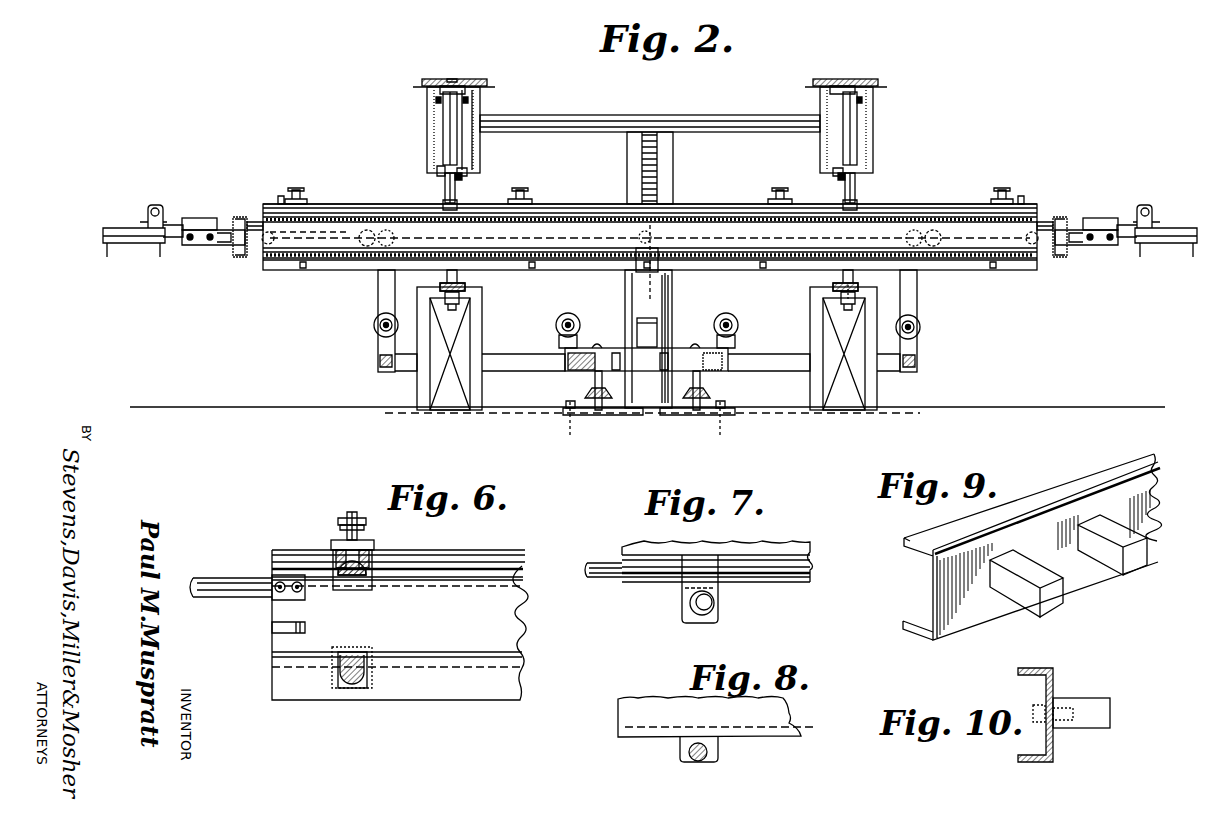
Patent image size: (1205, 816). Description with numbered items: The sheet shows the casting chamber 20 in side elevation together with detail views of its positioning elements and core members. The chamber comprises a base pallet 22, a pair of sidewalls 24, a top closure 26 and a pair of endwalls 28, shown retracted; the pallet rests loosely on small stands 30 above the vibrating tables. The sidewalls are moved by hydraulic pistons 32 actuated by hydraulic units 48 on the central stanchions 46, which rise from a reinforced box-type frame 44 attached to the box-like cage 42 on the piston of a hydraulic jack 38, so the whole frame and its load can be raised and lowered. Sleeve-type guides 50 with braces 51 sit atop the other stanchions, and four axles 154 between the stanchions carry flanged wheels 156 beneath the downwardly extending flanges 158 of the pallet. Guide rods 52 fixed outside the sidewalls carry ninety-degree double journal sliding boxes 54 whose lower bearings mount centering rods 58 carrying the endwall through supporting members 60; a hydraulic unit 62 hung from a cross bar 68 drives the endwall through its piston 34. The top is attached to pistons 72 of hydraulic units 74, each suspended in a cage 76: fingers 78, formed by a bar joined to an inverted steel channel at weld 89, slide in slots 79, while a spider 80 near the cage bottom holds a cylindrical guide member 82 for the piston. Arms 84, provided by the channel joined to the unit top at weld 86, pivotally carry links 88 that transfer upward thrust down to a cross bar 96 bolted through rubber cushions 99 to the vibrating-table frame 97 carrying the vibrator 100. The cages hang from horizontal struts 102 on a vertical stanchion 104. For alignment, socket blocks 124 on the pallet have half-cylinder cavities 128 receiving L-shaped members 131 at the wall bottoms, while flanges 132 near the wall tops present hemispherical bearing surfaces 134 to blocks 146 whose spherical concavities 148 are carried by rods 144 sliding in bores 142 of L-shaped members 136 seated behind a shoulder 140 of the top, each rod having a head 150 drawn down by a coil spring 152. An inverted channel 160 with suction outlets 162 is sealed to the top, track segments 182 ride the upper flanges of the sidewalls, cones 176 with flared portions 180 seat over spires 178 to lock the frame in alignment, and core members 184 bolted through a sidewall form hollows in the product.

In FIG. 2, the casting chamber 20 is at (872, 233).
In FIG. 2, the base pallet 22 is at (325, 262).
In FIG. 6, the base pallet 22 is at (515, 670).
In FIG. 8, the base pallet 22 is at (622, 723).
In FIG. 6, the sidewalls 24 is at (280, 617).
In FIG. 7, the sidewalls 24 is at (650, 557).
In FIG. 9, the sidewalls 24 is at (1144, 490).
In FIG. 10, the sidewalls 24 is at (1053, 675).
In FIG. 2, the top closure 26 is at (710, 215).
In FIG. 2, the endwalls 28 is at (250, 258).
In FIG. 2, the stands 30 is at (463, 278).
In FIG. 2, the hydraulic pistons 32 is at (652, 238).
In FIG. 2, the piston 34 is at (178, 240).
In FIG. 2, the hydraulic jack 38 is at (622, 345).
In FIG. 2, the box-like cage 42 is at (652, 325).
In FIG. 2, the reinforced box-type frame 44 is at (518, 365).
In FIG. 2, the stanchions 46 is at (378, 287).
In FIG. 2, the hydraulic unit 48 is at (639, 238).
In FIG. 2, the sleeve-type guides 50 is at (398, 238).
In FIG. 2, the braces 51 is at (292, 262).
In FIG. 2, the guide rods 52 is at (257, 221).
In FIG. 6, the guide rods 52 is at (217, 578).
In FIG. 7, the guide rods 52 is at (601, 563).
In FIG. 2, the double journal sliding box 54 is at (204, 217).
In FIG. 2, the centering rods 58 is at (210, 242).
In FIG. 2, the supporting members 60 is at (232, 248).
In FIG. 2, the hydraulic unit 62 is at (122, 226).
In FIG. 2, the cross bar 68 is at (158, 208).
In FIG. 2, the pistons 72 is at (445, 190).
In FIG. 2, the hydraulic units 74 is at (450, 130).
In FIG. 2, the cage 76 is at (476, 149).
In FIG. 2, the laterally-directed fingers 78 is at (422, 90).
In FIG. 2, the slots 79 is at (474, 95).
In FIG. 2, the spider 80 is at (469, 171).
In FIG. 2, the cylindrical guide member 82 is at (462, 178).
In FIG. 2, the arms 84 is at (436, 100).
In FIG. 2, the inverted steel channel weld 86 is at (463, 86).
In FIG. 2, the link 88 is at (437, 178).
In FIG. 2, the finger bar weld 89 is at (450, 79).
In FIG. 2, the cross bar 96 is at (440, 283).
In FIG. 2, the frame 97 is at (483, 330).
In FIG. 2, the rubber cushions 99 is at (856, 286).
In FIG. 2, the vibrator 100 is at (460, 300).
In FIG. 2, the struts 102 is at (655, 122).
In FIG. 2, the vertical stanchion 104 is at (675, 155).
In FIG. 6, the socket blocks 124 is at (332, 680).
In FIG. 8, the socket blocks 124 is at (684, 749).
In FIG. 8, the half-cylinder 128 is at (718, 749).
In FIG. 6, the L-shaped members 131 is at (352, 678).
In FIG. 8, the L-shaped members 131 is at (702, 761).
In FIG. 6, the flanges 132 is at (365, 590).
In FIG. 7, the flanges 132 is at (718, 597).
In FIG. 6, the hemispherical bearing surface 134 is at (355, 578).
In FIG. 7, the hemispherical bearing surface 134 is at (716, 612).
In FIG. 2, the L-shaped member 136 is at (534, 199).
In FIG. 2, the shoulder 140 is at (597, 208).
In FIG. 6, the shoulder 140 is at (472, 553).
In FIG. 6, the cylindrical bore 142 is at (364, 528).
In FIG. 2, the rod 144 is at (308, 196).
In FIG. 6, the rod 144 is at (353, 512).
In FIG. 6, the block 146 is at (336, 556).
In FIG. 6, the spherical concavity 148 is at (372, 562).
In FIG. 6, the head 150 is at (342, 521).
In FIG. 6, the coil spring 152 is at (338, 550).
In FIG. 2, the axle 154 is at (374, 328).
In FIG. 2, the flanged wheels 156 is at (375, 318).
In FIG. 6, the downwardly extending flanges 158 is at (420, 690).
In FIG. 8, the downwardly extending flanges 158 is at (780, 737).
In FIG. 2, the inverted channel 160 is at (972, 203).
In FIG. 2, the outlet means 162 is at (280, 195).
In FIG. 2, the inverted cone-like structure 176 is at (593, 385).
In FIG. 2, the spires 178 is at (597, 412).
In FIG. 2, the flared portion 180 is at (587, 393).
In FIG. 6, the track segment 182 is at (505, 558).
In FIG. 7, the track segment 182 is at (652, 573).
In FIG. 9, the core members 184 is at (1136, 565).
In FIG. 10, the core members 184 is at (1110, 708).